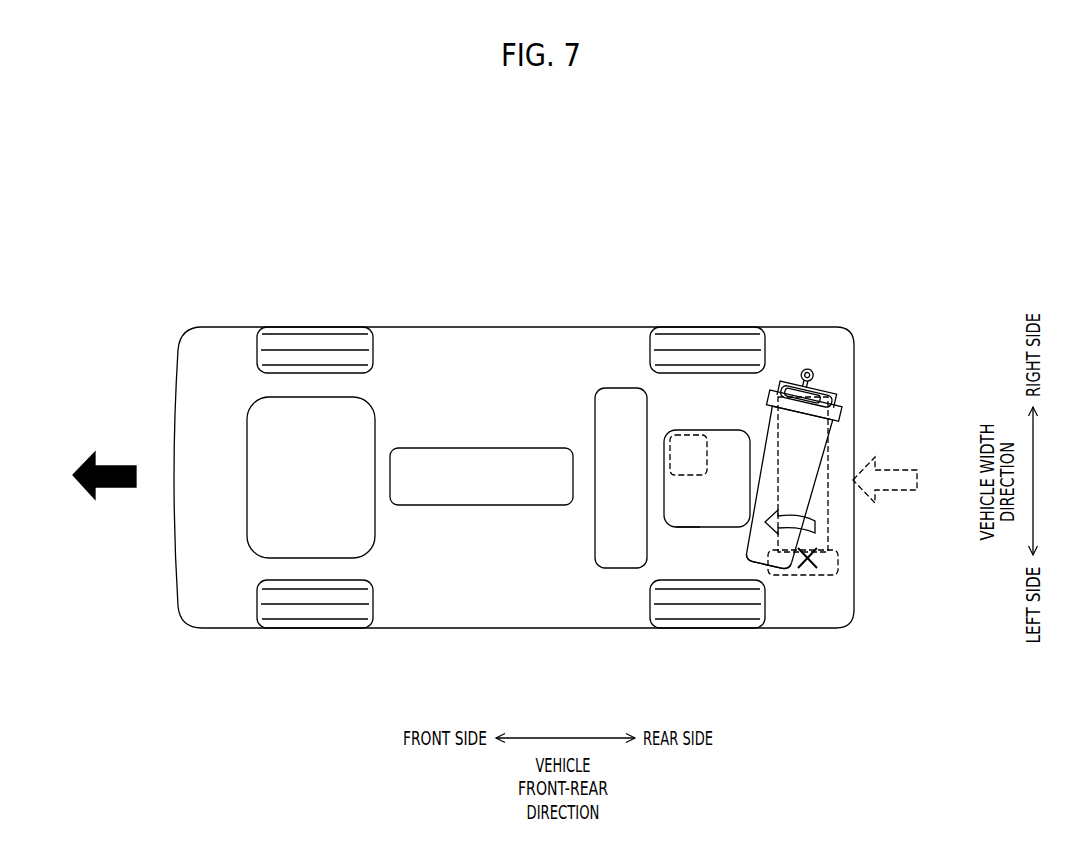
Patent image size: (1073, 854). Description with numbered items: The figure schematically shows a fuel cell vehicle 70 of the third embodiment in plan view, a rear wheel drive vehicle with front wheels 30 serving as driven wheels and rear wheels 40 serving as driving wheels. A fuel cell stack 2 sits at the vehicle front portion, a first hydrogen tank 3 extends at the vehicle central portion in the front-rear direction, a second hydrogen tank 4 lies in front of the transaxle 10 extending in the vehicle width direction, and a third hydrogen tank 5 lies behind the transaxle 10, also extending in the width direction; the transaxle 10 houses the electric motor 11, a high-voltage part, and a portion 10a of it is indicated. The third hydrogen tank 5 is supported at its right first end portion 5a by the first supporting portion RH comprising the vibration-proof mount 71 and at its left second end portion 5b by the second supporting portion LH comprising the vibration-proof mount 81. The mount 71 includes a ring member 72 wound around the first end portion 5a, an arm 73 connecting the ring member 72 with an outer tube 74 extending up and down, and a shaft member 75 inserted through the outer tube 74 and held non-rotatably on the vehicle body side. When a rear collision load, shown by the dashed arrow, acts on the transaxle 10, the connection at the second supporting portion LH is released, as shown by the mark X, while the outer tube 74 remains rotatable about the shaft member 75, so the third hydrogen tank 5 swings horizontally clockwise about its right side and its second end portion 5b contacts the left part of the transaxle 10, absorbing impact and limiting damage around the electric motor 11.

The fuel cell stack 2 is at (260, 431).
The first hydrogen tank 3 is at (442, 488).
The second hydrogen tank 4 is at (632, 395).
The third hydrogen tank 5 is at (829, 471).
The first end portion 5a is at (831, 397).
The second end portion 5b is at (763, 563).
The transaxle 10 is at (671, 503).
The unit bracket 10a is at (687, 528).
The electric motor 11 is at (668, 452).
The front wheels 30 is at (312, 610).
The rear wheels 40 is at (705, 622).
The fuel cell vehicle 70 is at (515, 326).
The vibration-proof mount 71 is at (819, 357).
The ring member 72 is at (841, 414).
The arm 73 is at (839, 403).
The outer tube 74 is at (829, 386).
The shaft member 75 is at (807, 368).
The vibration-proof mount 81 is at (840, 560).